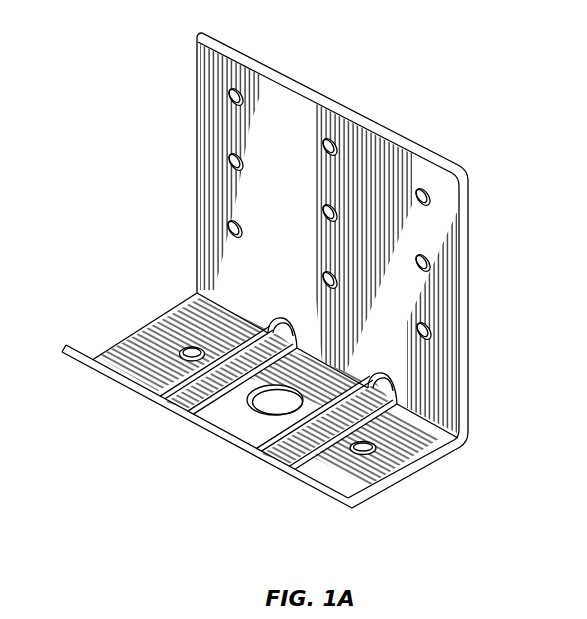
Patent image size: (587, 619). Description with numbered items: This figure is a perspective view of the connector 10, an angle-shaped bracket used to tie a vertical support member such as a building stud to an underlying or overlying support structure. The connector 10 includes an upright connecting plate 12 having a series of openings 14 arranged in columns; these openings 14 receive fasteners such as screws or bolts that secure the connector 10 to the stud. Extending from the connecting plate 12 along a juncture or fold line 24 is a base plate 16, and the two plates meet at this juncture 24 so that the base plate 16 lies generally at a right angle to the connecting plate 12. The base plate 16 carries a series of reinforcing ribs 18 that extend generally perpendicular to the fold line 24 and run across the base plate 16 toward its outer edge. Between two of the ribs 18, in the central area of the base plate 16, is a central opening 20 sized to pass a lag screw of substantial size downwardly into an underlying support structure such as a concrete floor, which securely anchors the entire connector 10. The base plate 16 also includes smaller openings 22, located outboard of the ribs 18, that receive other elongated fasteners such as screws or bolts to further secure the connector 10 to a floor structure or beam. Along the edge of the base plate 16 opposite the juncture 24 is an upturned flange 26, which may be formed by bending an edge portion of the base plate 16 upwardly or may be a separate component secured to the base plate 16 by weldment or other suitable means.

The connector 10 is at (279, 272).
The connecting plate 12 is at (357, 270).
The openings 14 is at (432, 199).
The base plate 16 is at (279, 395).
The reinforcing ribs 18 is at (180, 395).
The central opening 20 is at (251, 415).
The openings 22 is at (190, 349).
The juncture or fold line 24 is at (448, 425).
The upturned flange 26 is at (67, 347).